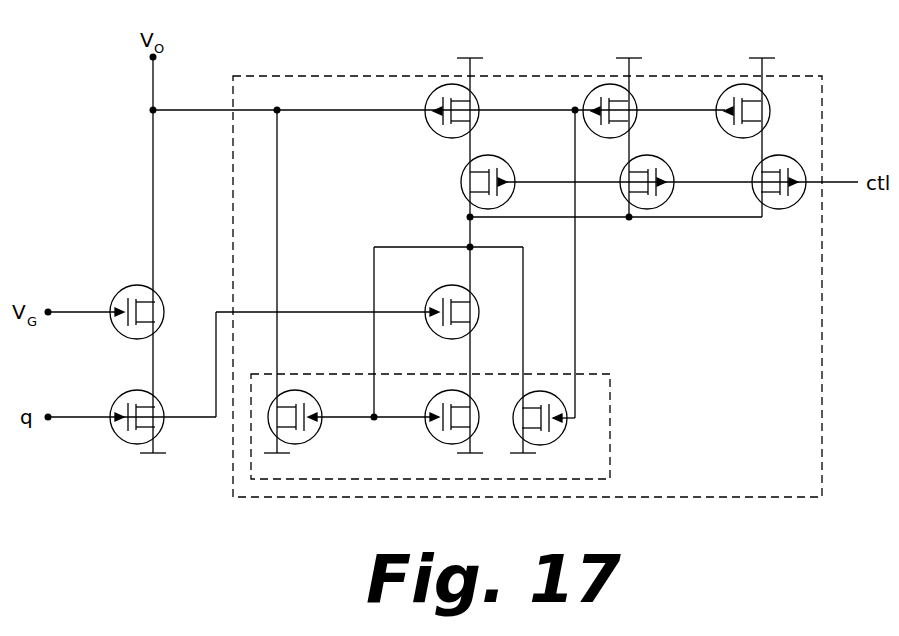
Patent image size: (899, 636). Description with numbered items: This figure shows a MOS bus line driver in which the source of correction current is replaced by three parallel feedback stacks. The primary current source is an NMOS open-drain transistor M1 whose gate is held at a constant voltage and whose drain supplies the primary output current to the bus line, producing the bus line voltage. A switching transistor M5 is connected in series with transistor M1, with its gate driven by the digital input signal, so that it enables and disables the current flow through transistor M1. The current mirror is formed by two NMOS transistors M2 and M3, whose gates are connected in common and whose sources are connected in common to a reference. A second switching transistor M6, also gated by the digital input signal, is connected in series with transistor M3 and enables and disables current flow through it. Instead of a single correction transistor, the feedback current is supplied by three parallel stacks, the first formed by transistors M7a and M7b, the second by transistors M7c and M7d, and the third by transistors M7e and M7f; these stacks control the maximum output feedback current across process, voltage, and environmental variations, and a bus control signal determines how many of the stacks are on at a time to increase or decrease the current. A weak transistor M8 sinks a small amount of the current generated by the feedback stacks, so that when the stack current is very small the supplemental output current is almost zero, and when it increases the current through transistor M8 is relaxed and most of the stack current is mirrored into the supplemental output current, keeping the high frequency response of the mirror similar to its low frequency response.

The primary transistor M1 is at (123, 326).
The current mirror transistor M2 is at (308, 432).
The current mirror transistor M3 is at (437, 432).
The switching transistor M5 is at (123, 432).
The switching transistor M6 is at (438, 327).
The feedback stack transistor M7a is at (436, 117).
The feedback stack transistor M7b is at (470, 186).
The feedback stack transistor M7c is at (588, 110).
The feedback stack transistor M7d is at (630, 185).
The feedback stack transistor M7e is at (721, 110).
The feedback stack transistor M7f is at (762, 185).
The weak transistor M8 is at (552, 432).